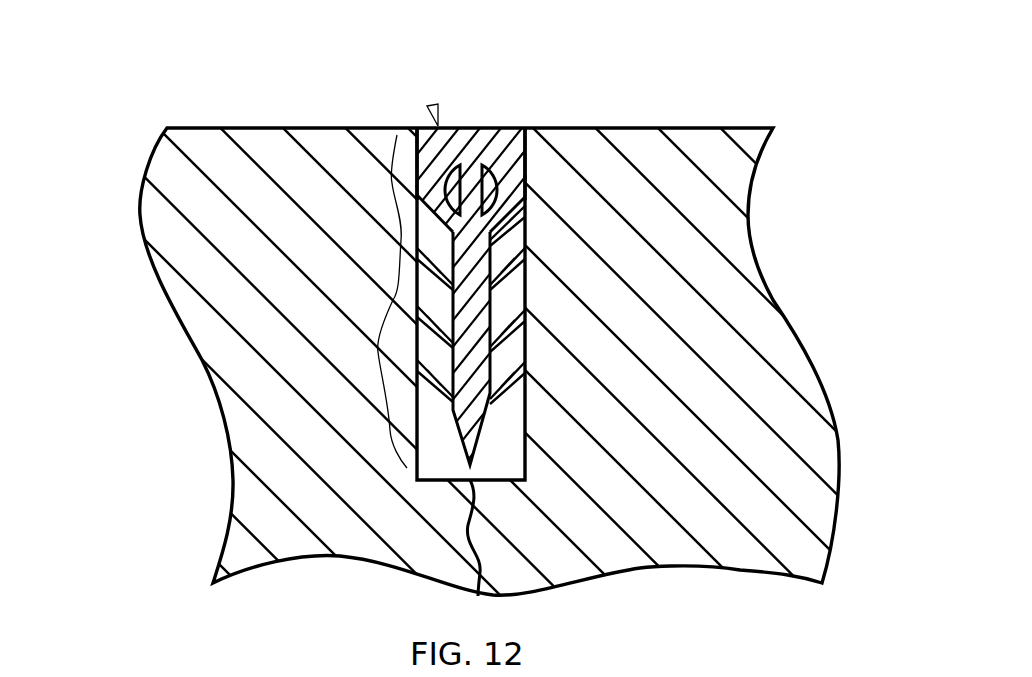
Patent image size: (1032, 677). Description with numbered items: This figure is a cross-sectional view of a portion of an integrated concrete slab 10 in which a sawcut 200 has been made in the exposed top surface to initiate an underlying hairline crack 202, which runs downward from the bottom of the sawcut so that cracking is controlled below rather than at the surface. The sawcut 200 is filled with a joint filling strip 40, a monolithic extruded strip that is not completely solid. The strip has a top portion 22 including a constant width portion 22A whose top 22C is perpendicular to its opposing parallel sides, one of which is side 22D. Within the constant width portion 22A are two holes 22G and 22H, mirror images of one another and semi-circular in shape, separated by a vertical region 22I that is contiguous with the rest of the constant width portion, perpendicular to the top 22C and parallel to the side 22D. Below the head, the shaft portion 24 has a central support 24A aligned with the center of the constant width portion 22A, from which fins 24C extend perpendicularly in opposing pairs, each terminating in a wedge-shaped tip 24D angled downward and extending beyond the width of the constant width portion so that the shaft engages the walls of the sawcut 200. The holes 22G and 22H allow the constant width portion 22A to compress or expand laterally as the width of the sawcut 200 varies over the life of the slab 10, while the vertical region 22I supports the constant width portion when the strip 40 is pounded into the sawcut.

The integrated concrete slab 10 is at (187, 182).
The top portion 22 is at (481, 247).
The constant width portion 22A is at (488, 158).
The top 22C is at (433, 140).
The side 22D is at (526, 172).
The hole 22G is at (418, 128).
The hole 22H is at (526, 185).
The vertical region 22I is at (455, 142).
The shaft portion 24 is at (481, 284).
The central support 24A is at (526, 280).
The fin 24C is at (420, 313).
The wedge-shaped tip 24D is at (420, 370).
The joint filling strip 40 is at (432, 104).
The sawcut 200 is at (527, 475).
The hairline crack 202 is at (488, 568).